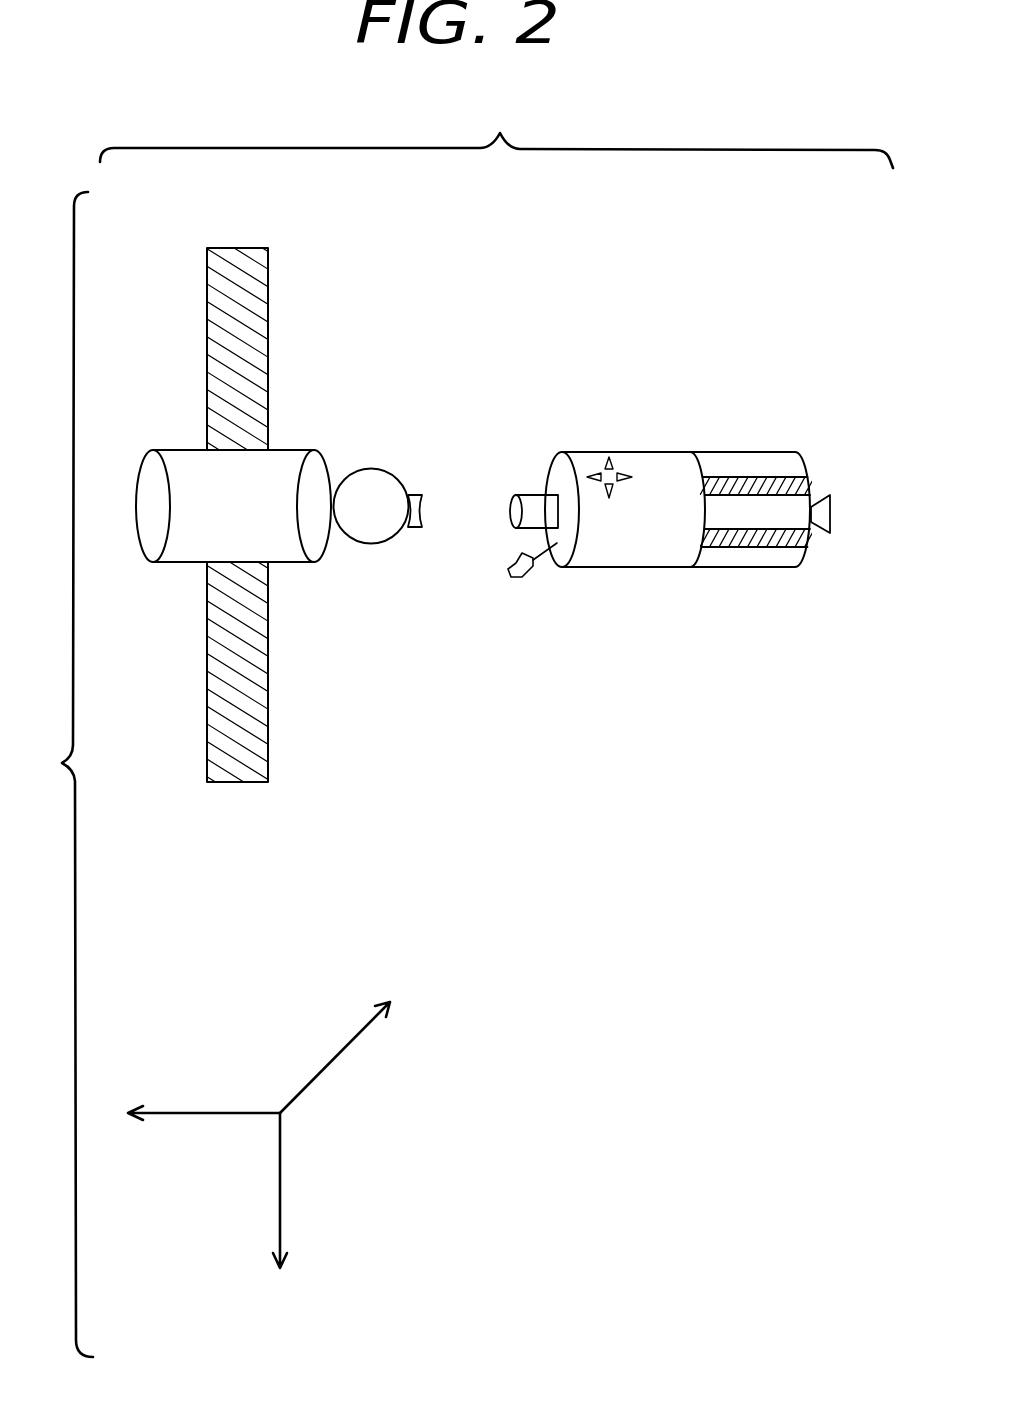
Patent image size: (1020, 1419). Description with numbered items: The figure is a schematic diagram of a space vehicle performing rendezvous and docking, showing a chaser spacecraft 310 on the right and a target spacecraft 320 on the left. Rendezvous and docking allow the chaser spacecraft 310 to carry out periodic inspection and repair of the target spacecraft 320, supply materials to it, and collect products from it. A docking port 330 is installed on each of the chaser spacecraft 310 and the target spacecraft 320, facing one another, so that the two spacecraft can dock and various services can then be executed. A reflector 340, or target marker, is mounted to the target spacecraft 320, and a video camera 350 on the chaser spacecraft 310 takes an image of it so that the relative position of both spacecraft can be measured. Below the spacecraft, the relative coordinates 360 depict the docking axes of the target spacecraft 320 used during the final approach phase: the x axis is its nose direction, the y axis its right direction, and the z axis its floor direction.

The chaser spacecraft 310 is at (748, 567).
The target spacecraft 320 is at (153, 562).
The docking port 330 is at (527, 493).
The reflector 340 is at (386, 540).
The video camera 350 is at (524, 577).
The relative coordinates 360 is at (283, 1194).